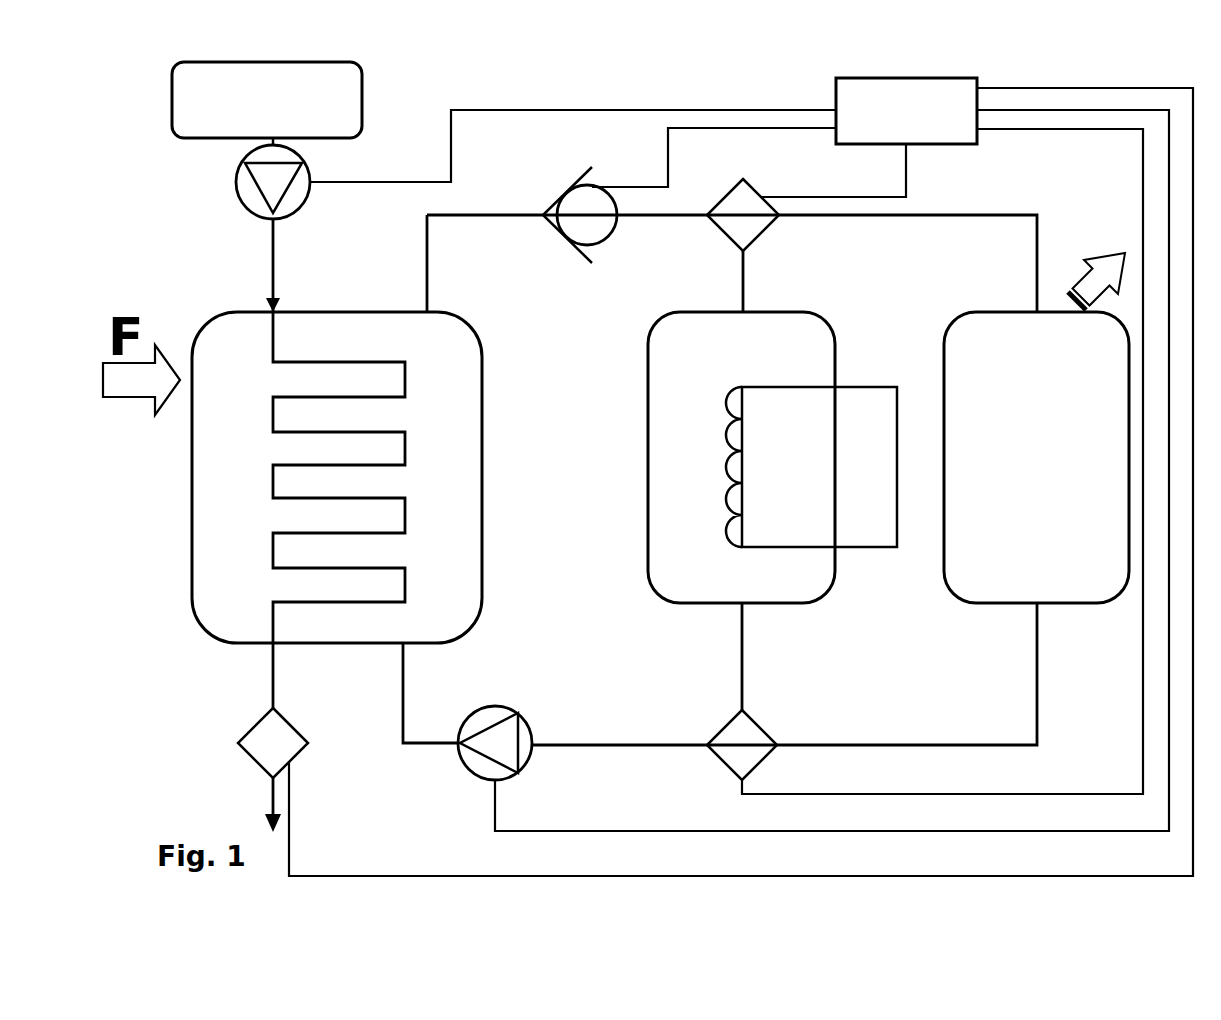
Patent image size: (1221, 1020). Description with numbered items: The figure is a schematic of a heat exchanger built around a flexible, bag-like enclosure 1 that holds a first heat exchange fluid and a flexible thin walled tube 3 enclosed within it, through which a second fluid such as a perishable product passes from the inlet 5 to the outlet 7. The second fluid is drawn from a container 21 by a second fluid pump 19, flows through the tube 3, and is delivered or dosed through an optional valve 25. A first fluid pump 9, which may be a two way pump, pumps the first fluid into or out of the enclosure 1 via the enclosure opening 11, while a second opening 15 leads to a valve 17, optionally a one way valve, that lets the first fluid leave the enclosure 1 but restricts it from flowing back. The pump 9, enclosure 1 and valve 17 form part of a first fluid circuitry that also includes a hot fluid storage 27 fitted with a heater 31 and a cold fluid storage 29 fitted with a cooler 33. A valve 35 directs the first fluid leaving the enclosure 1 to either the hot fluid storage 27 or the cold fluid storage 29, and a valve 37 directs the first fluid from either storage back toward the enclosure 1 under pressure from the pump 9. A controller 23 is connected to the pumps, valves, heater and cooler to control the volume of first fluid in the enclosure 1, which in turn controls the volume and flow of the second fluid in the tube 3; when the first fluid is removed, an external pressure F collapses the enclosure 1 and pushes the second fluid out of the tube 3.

The flexible enclosure 1 is at (197, 533).
The flexible thin walled tube 3 is at (405, 387).
The inlet 5 is at (268, 305).
The outlet 7 is at (267, 650).
The first fluid pump 9 is at (522, 725).
The enclosure opening 11 is at (403, 652).
The second opening 15 is at (425, 308).
The valve 17 is at (617, 200).
The second fluid pump 19 is at (305, 166).
The container 21 is at (362, 100).
The controller 23 is at (836, 94).
The optional valve 25 is at (257, 755).
The hot fluid storage 27 is at (802, 590).
The cold fluid storage 29 is at (1072, 585).
The heater 31 is at (725, 472).
The cooler 33 is at (1108, 273).
The valve 35 is at (753, 230).
The valve 37 is at (765, 730).